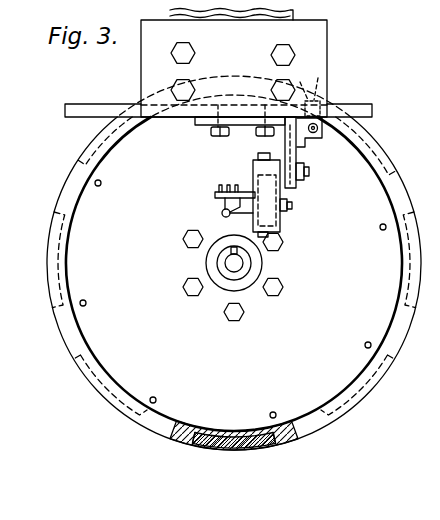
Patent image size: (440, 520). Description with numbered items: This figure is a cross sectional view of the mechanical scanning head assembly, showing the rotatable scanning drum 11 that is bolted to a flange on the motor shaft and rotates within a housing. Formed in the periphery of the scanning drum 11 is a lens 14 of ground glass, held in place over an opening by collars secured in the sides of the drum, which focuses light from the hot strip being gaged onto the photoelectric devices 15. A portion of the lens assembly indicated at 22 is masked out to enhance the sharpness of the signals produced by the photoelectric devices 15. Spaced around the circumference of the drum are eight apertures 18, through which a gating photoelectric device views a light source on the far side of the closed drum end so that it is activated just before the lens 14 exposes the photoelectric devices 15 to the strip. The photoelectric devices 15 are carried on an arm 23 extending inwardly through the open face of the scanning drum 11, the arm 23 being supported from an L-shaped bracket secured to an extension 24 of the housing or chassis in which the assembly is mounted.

The rotatable scanning drum 11 is at (395, 341).
The lens 14 is at (237, 449).
The photoelectric devices 15 is at (222, 215).
The apertures 18 is at (101, 183).
The masked portion of lens assembly 22 is at (232, 434).
The arm 23 is at (296, 188).
The extension of housing 24 is at (296, 14).